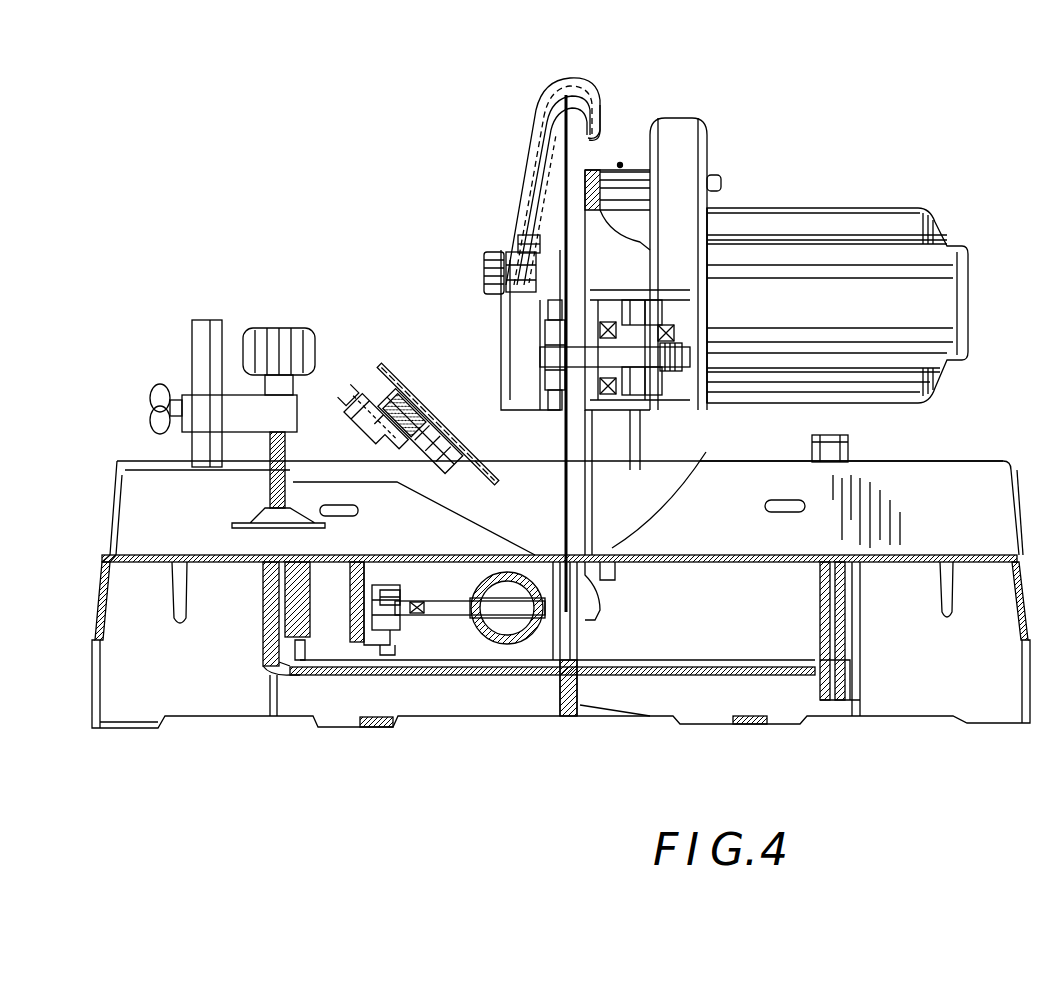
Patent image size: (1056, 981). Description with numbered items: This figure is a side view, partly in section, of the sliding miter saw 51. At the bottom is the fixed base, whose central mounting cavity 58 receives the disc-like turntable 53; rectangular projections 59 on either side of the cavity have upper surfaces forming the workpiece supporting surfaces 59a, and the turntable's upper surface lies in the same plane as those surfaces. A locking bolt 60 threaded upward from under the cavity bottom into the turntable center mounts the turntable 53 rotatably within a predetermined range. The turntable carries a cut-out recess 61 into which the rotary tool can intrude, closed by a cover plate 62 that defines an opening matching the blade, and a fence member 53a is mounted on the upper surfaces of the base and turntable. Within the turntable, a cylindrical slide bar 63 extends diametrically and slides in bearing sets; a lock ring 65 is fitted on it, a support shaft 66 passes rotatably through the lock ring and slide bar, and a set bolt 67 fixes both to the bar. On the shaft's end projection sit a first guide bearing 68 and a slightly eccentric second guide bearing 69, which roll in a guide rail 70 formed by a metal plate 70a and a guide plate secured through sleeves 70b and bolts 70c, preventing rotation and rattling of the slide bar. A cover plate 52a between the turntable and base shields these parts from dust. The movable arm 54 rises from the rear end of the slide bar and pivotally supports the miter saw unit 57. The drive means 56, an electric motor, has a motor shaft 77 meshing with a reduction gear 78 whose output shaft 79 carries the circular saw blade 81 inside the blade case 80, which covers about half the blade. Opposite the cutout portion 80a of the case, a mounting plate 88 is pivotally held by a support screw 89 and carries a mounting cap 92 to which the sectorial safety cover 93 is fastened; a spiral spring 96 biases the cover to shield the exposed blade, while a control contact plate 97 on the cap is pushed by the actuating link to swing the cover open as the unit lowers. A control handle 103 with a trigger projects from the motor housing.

The sliding miter saw 51 is at (772, 225).
The cover plate 52a is at (445, 645).
The turntable 53 is at (788, 690).
The fence member 53a is at (898, 466).
The movable arm 54 is at (505, 400).
The drive means 56 is at (738, 245).
The miter saw unit 57 is at (624, 168).
The mounting cavity 58 is at (690, 664).
The rectangular projections 59 is at (92, 630).
The workpiece supporting surfaces 59a is at (137, 553).
The locking bolt 60 is at (560, 650).
The cut-out recess 61 is at (600, 650).
The cover plate 62 is at (664, 500).
The slide bar 63 is at (465, 645).
The lock ring 65 is at (530, 650).
The support shaft 66 is at (425, 645).
The set bolt 67 is at (503, 648).
The first guide bearing 68 is at (395, 588).
The second guide bearing 69 is at (356, 660).
The guide rail 70 is at (345, 600).
The metal plate 70a is at (375, 590).
The sleeves 70b is at (343, 625).
The bolts 70c is at (365, 655).
The motor shaft 77 is at (683, 250).
The reduction gear 78 is at (635, 410).
The output shaft 79 is at (562, 408).
The blade case 80 is at (572, 90).
The cutout portion 80a is at (530, 200).
The circular saw blade 81 is at (535, 130).
The mounting plate 88 is at (508, 252).
The support screw 89 is at (513, 250).
The mounting cap 92 is at (484, 272).
The safety cover 93 is at (520, 238).
The spiral spring 96 is at (545, 400).
The control contact plate 97 is at (497, 482).
The control handle 103 is at (668, 190).